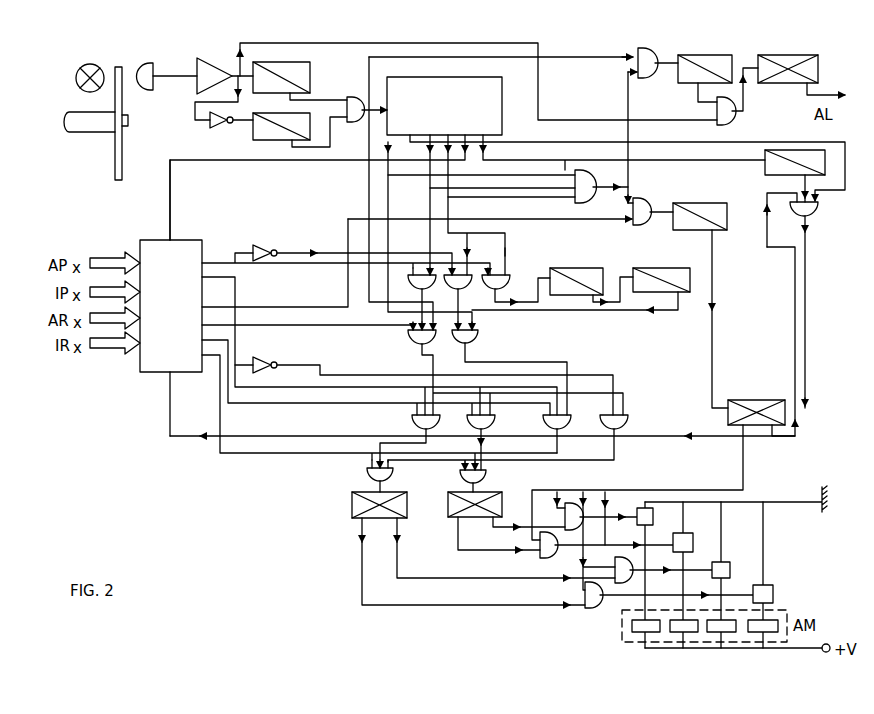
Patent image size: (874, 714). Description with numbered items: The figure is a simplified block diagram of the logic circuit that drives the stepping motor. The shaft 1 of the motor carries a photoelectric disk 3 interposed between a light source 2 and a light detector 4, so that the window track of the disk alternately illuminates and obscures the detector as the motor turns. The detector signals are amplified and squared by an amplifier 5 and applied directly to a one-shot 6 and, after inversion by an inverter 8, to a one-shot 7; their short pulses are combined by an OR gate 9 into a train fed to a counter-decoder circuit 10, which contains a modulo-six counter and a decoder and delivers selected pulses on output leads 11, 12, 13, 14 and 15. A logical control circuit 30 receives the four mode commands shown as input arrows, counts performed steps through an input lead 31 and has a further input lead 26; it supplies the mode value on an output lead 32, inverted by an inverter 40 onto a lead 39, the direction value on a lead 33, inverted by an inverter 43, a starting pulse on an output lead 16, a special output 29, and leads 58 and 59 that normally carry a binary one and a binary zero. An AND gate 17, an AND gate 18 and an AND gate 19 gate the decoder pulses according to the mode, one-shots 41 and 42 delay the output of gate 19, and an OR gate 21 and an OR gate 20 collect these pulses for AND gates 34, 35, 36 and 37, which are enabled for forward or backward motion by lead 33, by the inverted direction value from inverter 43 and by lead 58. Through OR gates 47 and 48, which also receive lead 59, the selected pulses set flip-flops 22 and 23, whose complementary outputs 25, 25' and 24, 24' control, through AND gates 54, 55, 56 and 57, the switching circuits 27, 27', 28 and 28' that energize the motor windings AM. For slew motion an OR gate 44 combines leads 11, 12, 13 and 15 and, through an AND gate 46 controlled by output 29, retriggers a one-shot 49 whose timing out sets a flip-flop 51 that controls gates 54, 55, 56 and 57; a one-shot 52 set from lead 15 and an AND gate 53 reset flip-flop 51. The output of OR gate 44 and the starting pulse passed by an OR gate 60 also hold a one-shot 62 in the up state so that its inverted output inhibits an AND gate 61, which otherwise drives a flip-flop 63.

The shaft 1 is at (128, 124).
The light source 2 is at (78, 71).
The photoelectric disk 3 is at (124, 67).
The light detector 4 is at (149, 70).
The amplifier 5 is at (213, 72).
The one-shot 6 is at (308, 74).
The one-shot 7 is at (272, 143).
The inverter 8 is at (223, 130).
The OR gate 9 is at (354, 102).
The counter-decoder circuit 10 is at (492, 102).
The output lead 11 is at (410, 135).
The output lead 12 is at (430, 135).
The output lead 13 is at (448, 135).
The output lead 14 is at (465, 135).
The output lead 15 is at (483, 135).
The output lead 16 is at (303, 324).
The AND gate 17 is at (410, 289).
The AND gate 18 is at (445, 289).
The AND gate 19 is at (507, 286).
The OR gate 20 is at (478, 344).
The OR gate 21 is at (415, 348).
The flip-flop 22 is at (352, 512).
The flip-flop 23 is at (448, 512).
The complementary output 24 is at (527, 533).
The complementary output 24' is at (499, 546).
The complementary output 25 is at (506, 548).
The complementary output 25' is at (456, 561).
The input lead 26 is at (166, 405).
The switching circuit 27 is at (657, 517).
The switching circuit 27' is at (695, 533).
The switching circuit 28 is at (730, 560).
The switching circuit 28' is at (774, 584).
The special output 29 is at (268, 306).
The logical control circuit 30 is at (184, 240).
The input lead 31 is at (168, 227).
The output lead 32 is at (279, 275).
The lead 33 is at (224, 278).
The AND gate 34 is at (412, 420).
The AND gate 35 is at (468, 420).
The AND gate 36 is at (544, 420).
The AND gate 37 is at (622, 427).
The lead 39 is at (324, 249).
The inverter 40 is at (284, 249).
The one-shot 41 is at (585, 268).
The one-shot 42 is at (669, 268).
The inverter 43 is at (289, 360).
The OR gate 44 is at (591, 175).
The AND gate 46 is at (652, 203).
The OR gate 47 is at (366, 475).
The OR gate 48 is at (484, 474).
The one-shot 49 is at (708, 201).
The flip-flop 51 is at (765, 400).
The one-shot 52 is at (766, 178).
The AND gate 53 is at (814, 217).
The AND gate 54 is at (555, 557).
The AND gate 55 is at (564, 517).
The AND gate 56 is at (615, 569).
The AND gate 57 is at (601, 608).
The lead 58 is at (283, 410).
The lead 59 is at (283, 468).
The OR gate 60 is at (654, 52).
The AND gate 61 is at (727, 125).
The one-shot 62 is at (705, 55).
The flip-flop 63 is at (793, 55).